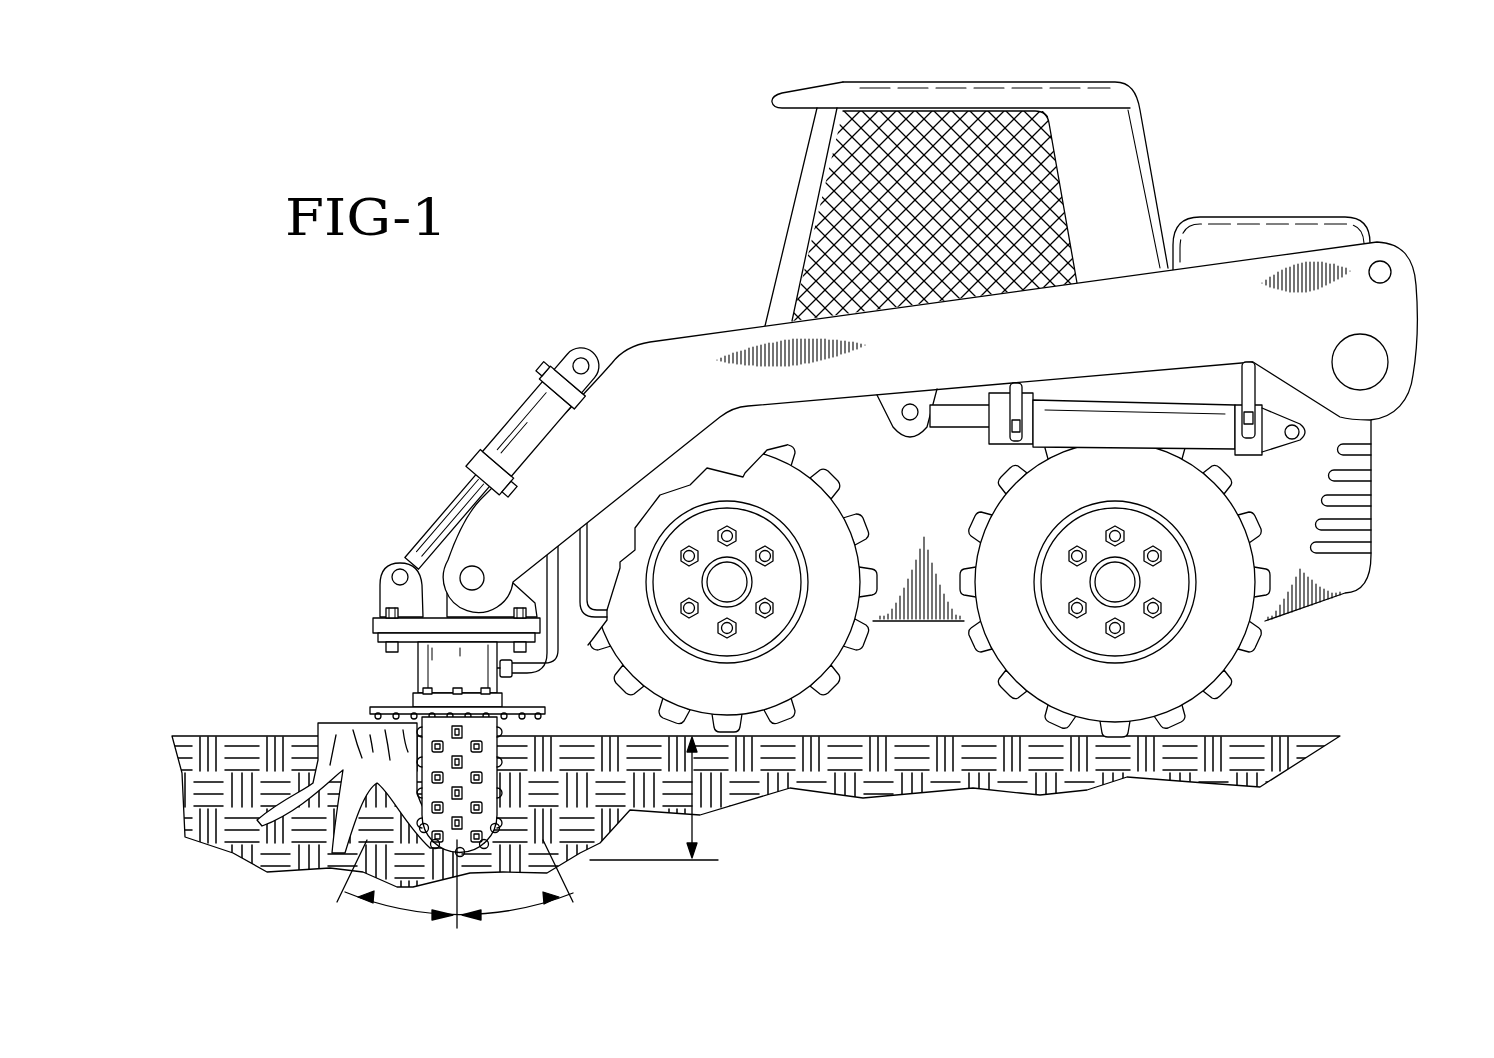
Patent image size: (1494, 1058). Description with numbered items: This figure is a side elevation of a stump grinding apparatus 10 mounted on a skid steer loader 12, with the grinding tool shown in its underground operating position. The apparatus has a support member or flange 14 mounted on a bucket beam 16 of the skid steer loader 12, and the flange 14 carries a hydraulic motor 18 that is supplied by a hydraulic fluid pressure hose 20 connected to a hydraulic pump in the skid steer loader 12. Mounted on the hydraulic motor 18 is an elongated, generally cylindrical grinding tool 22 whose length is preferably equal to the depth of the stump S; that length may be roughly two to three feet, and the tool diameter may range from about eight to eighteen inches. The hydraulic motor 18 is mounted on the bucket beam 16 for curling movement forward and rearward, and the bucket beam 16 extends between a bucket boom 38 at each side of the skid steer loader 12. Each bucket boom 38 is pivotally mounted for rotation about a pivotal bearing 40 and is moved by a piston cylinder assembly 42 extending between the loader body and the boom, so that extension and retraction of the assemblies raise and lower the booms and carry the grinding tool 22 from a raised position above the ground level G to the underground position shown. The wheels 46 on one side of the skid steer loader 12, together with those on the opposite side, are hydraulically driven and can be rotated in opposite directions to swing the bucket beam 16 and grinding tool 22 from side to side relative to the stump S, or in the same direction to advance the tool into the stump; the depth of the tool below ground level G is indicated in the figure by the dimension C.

The stump grinding apparatus 10 is at (401, 757).
The skid steer loader 12 is at (1160, 146).
The support member or flange 14 is at (378, 637).
The bucket beam 16 is at (378, 620).
The hydraulic motor 18 is at (428, 683).
The hydraulic fluid pressure hose 20 is at (548, 657).
The grinding tool 22 is at (428, 818).
The bucket boom 38 is at (665, 367).
The pivotal bearing 40 is at (1357, 370).
The piston cylinder assembly 42 is at (1204, 431).
The wheels 46 is at (767, 690).
The stump S is at (258, 822).
The ground level G is at (1373, 737).
The cutting depth C is at (692, 861).